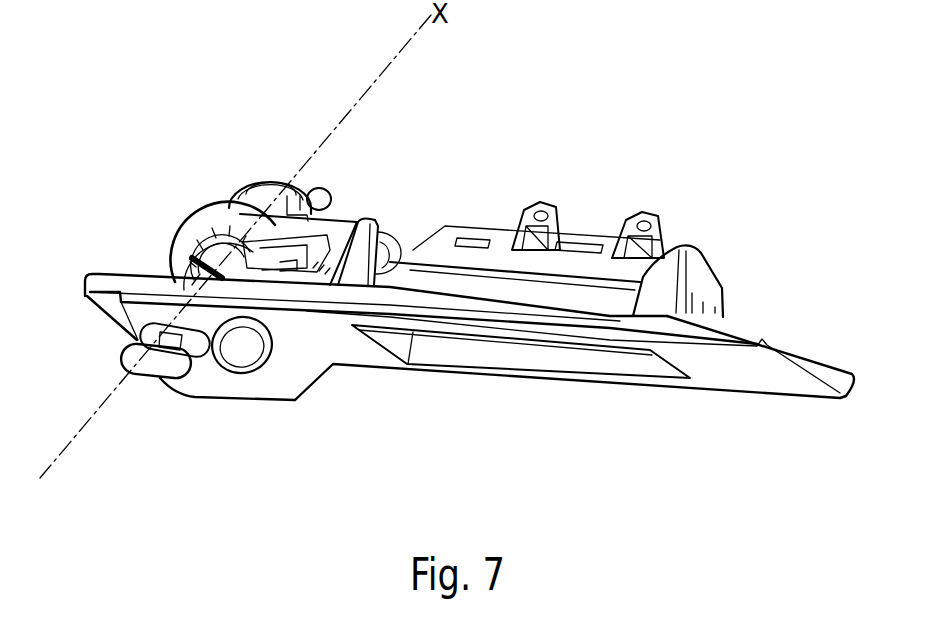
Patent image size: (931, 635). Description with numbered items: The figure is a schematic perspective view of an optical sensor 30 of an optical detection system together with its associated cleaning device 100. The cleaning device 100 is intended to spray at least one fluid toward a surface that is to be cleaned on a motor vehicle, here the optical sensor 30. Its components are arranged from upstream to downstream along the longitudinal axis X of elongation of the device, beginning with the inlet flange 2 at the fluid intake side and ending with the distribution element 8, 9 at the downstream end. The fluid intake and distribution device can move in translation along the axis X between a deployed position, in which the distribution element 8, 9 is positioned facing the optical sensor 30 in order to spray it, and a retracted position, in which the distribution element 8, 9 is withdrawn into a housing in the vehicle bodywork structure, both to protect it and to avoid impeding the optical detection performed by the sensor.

The cleaning device 100 is at (186, 192).
The inlet flange 2 is at (277, 180).
The distribution element 8 is at (110, 376).
The distribution element 9 is at (148, 400).
The optical sensor 30 is at (307, 277).